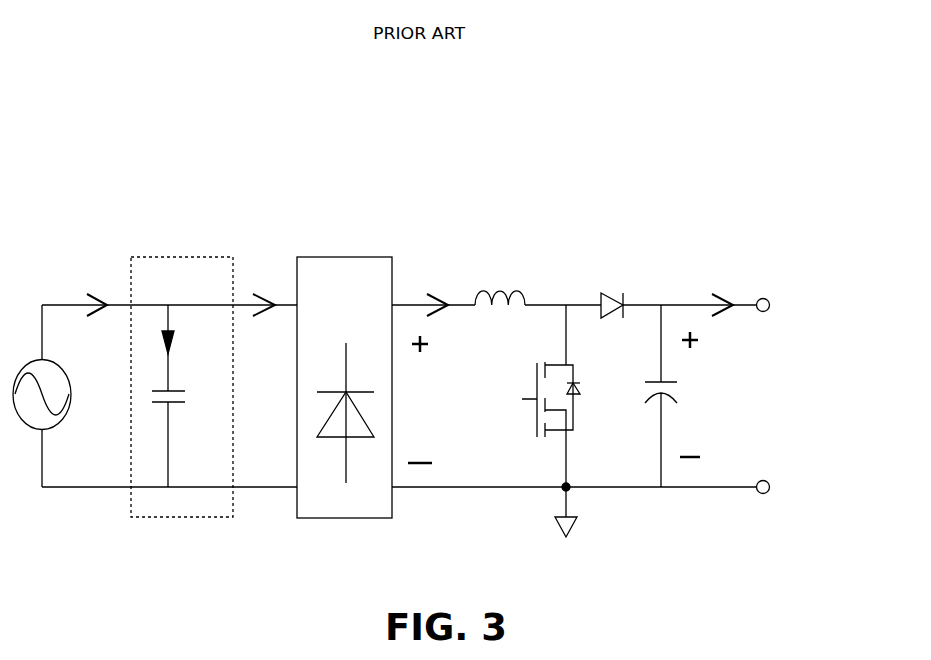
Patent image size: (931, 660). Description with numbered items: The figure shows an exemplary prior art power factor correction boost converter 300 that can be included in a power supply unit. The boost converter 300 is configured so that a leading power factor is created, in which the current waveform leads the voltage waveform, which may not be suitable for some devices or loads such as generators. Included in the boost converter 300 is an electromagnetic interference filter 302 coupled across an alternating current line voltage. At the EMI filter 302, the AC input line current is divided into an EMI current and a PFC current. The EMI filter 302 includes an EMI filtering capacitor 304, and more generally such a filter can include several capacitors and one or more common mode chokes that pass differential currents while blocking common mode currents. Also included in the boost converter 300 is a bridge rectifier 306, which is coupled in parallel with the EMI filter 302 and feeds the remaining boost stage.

The power factor correction boost converter 300 is at (655, 92).
The electromagnetic interference filter 302 is at (184, 257).
The EMI filtering capacitor 304 is at (152, 423).
The bridge rectifier 306 is at (341, 257).